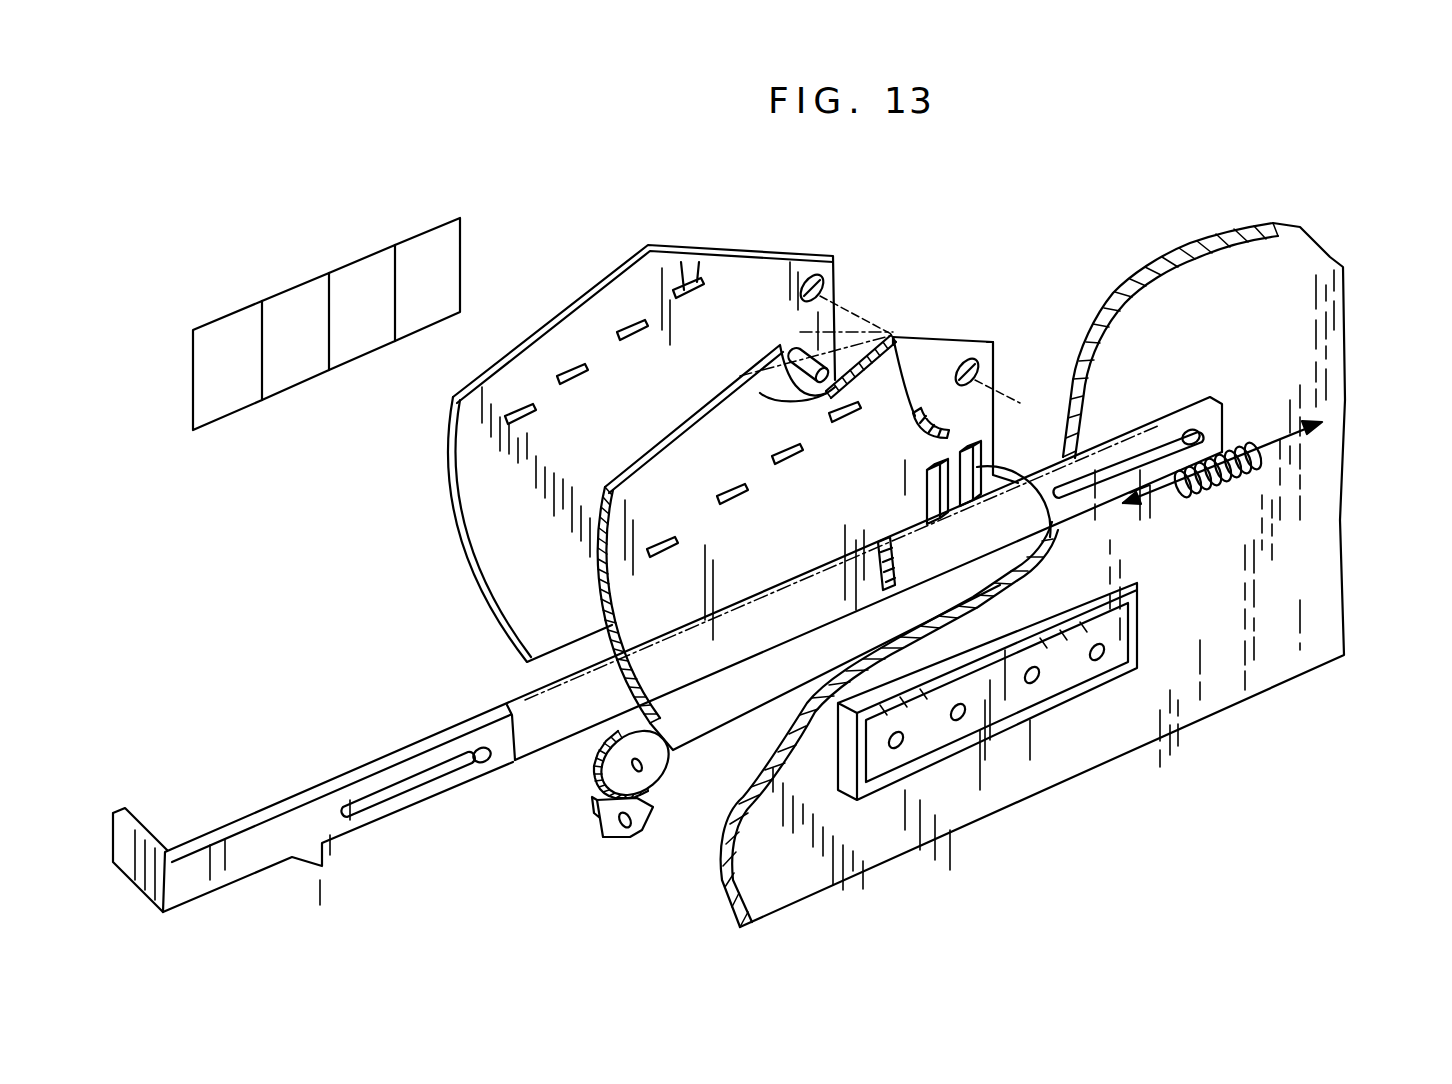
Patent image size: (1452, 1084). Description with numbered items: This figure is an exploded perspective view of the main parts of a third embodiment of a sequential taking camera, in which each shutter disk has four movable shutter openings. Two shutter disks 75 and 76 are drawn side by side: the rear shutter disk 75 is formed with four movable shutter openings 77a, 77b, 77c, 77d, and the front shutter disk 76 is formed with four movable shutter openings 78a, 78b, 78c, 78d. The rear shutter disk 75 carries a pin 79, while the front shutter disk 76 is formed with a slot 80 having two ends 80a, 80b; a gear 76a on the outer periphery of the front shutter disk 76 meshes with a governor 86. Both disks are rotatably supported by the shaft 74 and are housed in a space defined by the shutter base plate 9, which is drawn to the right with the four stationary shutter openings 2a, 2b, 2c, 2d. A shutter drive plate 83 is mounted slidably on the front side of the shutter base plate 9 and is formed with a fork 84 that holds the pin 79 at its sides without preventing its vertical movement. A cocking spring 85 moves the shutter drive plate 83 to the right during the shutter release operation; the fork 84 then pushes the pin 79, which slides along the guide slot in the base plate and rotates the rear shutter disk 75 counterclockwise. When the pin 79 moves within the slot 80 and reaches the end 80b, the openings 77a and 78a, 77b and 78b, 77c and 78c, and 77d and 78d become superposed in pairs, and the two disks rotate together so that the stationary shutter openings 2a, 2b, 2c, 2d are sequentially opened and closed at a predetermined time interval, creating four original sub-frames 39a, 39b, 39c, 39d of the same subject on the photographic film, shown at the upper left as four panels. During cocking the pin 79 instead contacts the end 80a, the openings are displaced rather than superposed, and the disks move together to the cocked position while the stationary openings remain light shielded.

The shutter base plate 9 is at (1332, 555).
The shutter opening 2a is at (900, 750).
The shutter opening 2b is at (962, 722).
The shutter opening 2c is at (1036, 685).
The shutter opening 2d is at (1102, 660).
The original sub-frame 39a is at (226, 326).
The original sub-frame 39b is at (293, 298).
The original sub-frame 39c is at (367, 268).
The original sub-frame 39d is at (433, 241).
The shaft 74 is at (847, 292).
The shutter disk 75 is at (780, 253).
The shutter disk 76 is at (695, 422).
The gear 76a is at (600, 568).
The movable shutter opening 77a is at (520, 404).
The movable shutter opening 77b is at (573, 363).
The movable shutter opening 77c is at (632, 320).
The movable shutter opening 77d is at (698, 286).
The movable shutter opening 78a is at (662, 540).
The movable shutter opening 78b is at (732, 490).
The movable shutter opening 78c is at (790, 462).
The movable shutter opening 78d is at (848, 425).
The pin 79 is at (793, 355).
The slot 80 is at (928, 410).
The end of slot 80a is at (898, 337).
The end of slot 80b is at (947, 434).
The shutter drive plate 83 is at (330, 795).
The fork 84 is at (1040, 524).
The cocking spring 85 is at (1278, 430).
The governor 86 is at (594, 836).